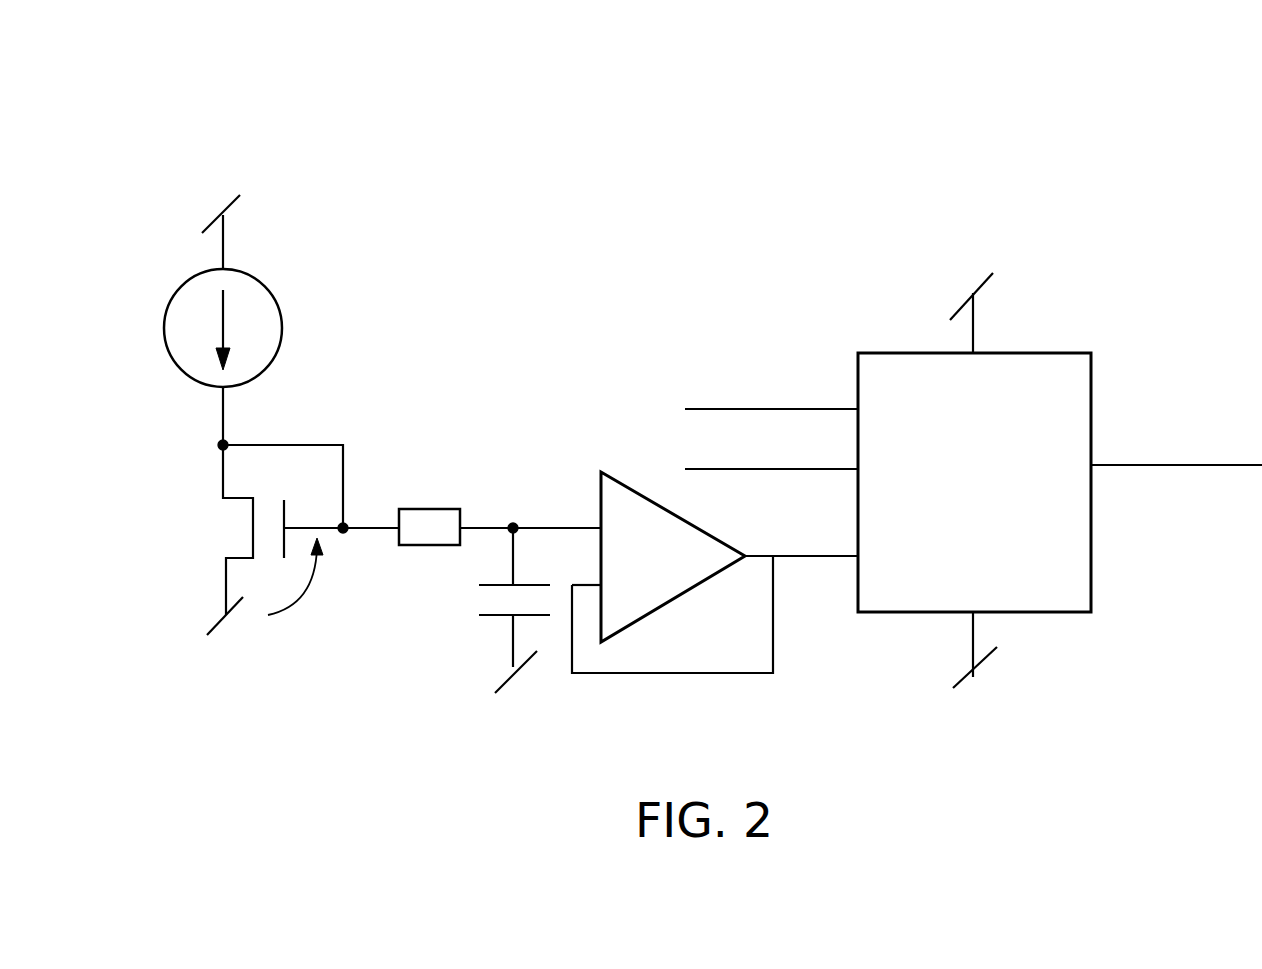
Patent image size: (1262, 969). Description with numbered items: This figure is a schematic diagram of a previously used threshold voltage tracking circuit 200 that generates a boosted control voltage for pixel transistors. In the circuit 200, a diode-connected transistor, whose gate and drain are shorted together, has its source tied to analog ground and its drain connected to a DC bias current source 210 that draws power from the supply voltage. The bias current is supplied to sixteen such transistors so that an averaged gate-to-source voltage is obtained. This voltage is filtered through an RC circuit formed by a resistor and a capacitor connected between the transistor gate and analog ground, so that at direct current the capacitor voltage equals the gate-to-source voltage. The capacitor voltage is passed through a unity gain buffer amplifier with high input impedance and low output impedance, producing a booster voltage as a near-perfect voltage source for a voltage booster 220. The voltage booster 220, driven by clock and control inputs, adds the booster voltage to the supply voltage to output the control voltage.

The threshold voltage tracking circuit 200 is at (707, 165).
The DC bias current source 210 is at (180, 375).
The voltage booster 220 is at (958, 572).